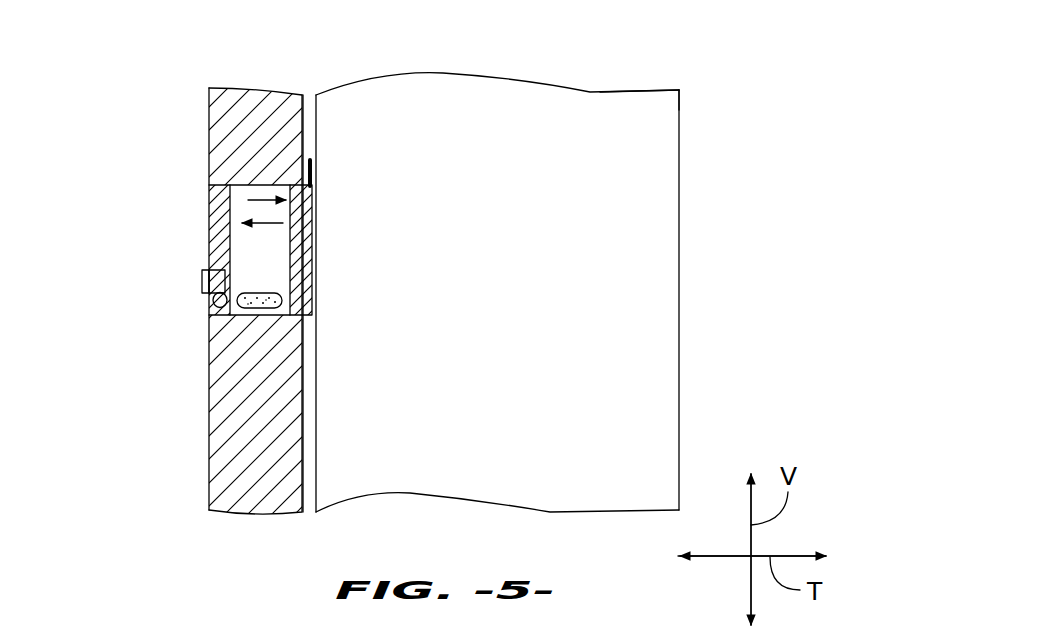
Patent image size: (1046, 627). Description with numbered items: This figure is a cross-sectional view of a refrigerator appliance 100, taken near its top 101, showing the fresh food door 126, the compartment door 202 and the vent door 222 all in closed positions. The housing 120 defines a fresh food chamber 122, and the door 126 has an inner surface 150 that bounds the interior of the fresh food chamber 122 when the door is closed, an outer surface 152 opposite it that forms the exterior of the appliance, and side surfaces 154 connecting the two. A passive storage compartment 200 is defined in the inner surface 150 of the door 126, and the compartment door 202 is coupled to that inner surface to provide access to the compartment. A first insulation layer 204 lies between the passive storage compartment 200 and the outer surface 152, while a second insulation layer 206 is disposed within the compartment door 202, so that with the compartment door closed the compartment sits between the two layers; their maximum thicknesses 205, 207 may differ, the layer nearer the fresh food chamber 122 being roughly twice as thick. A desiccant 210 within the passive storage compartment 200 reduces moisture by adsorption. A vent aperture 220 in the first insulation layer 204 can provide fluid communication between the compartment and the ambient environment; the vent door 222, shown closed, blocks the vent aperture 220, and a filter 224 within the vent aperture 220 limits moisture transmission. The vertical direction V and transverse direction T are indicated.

The refrigerator appliance 100 is at (629, 63).
The top 101 is at (694, 90).
The housing 120 is at (679, 317).
The fresh food chamber 122 is at (549, 308).
The door 126 is at (181, 107).
The inner surface 150 is at (305, 402).
The outer surface 152 is at (208, 445).
The side surfaces 154 is at (248, 86).
The passive storage compartment 200 is at (282, 272).
The compartment door 202 is at (309, 158).
The first insulation layer 204 is at (213, 202).
The maximum thickness 205 is at (206, 224).
The second insulation layer 206 is at (312, 262).
The maximum thickness 207 is at (319, 200).
The desiccant 210 is at (260, 310).
The vent aperture 220 is at (211, 310).
The vent door 222 is at (202, 283).
The filter 224 is at (220, 322).